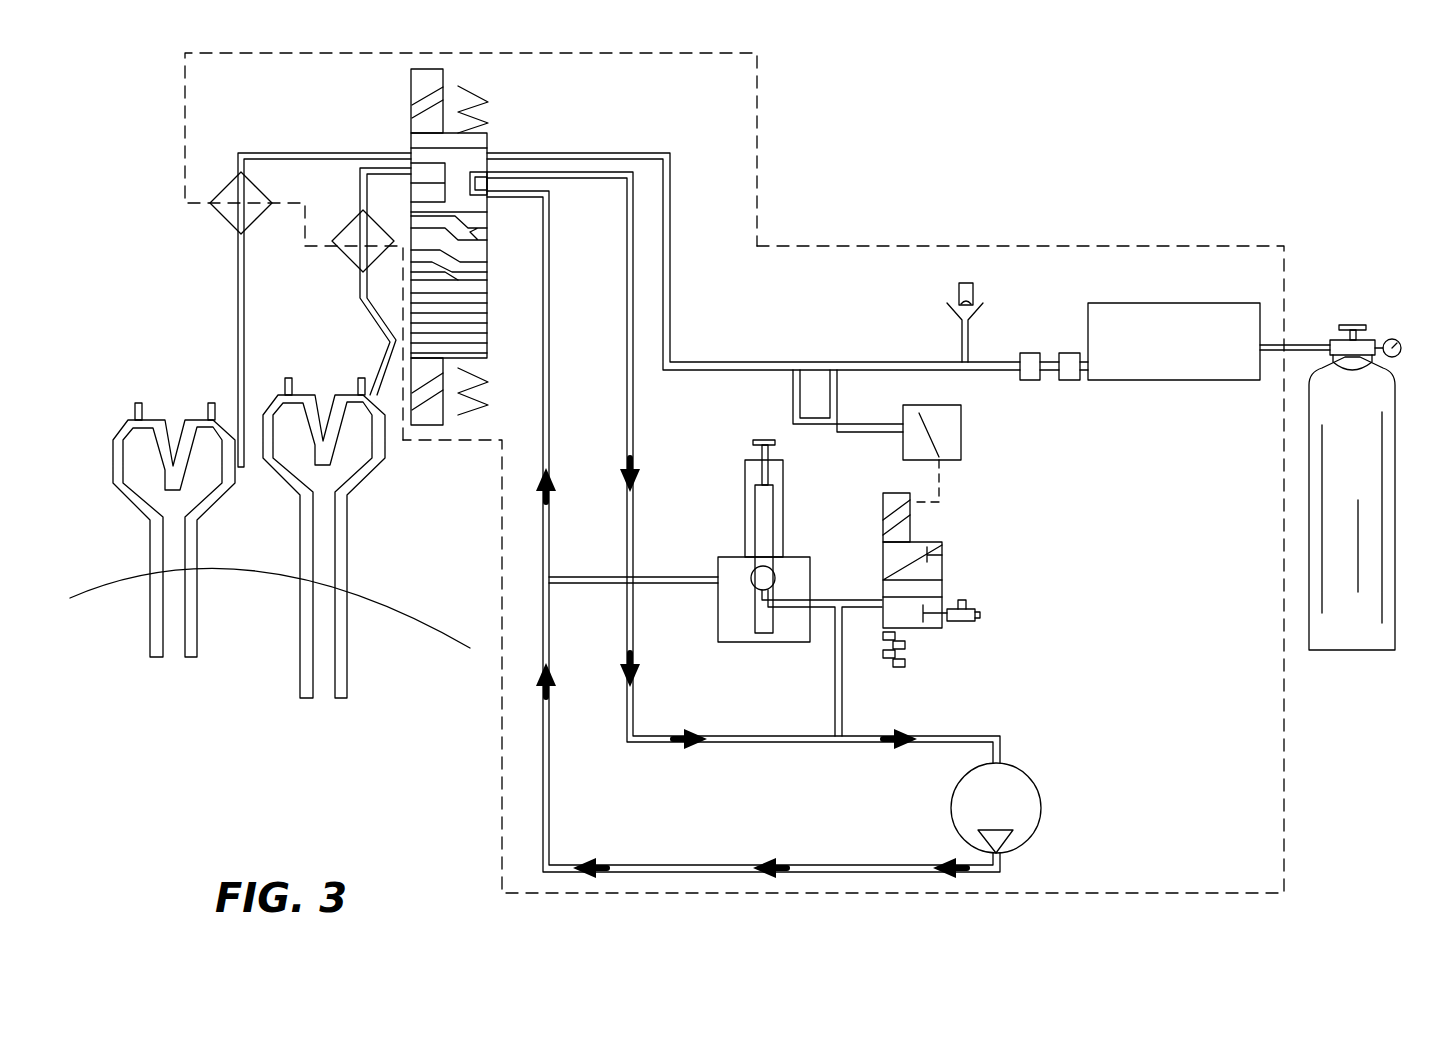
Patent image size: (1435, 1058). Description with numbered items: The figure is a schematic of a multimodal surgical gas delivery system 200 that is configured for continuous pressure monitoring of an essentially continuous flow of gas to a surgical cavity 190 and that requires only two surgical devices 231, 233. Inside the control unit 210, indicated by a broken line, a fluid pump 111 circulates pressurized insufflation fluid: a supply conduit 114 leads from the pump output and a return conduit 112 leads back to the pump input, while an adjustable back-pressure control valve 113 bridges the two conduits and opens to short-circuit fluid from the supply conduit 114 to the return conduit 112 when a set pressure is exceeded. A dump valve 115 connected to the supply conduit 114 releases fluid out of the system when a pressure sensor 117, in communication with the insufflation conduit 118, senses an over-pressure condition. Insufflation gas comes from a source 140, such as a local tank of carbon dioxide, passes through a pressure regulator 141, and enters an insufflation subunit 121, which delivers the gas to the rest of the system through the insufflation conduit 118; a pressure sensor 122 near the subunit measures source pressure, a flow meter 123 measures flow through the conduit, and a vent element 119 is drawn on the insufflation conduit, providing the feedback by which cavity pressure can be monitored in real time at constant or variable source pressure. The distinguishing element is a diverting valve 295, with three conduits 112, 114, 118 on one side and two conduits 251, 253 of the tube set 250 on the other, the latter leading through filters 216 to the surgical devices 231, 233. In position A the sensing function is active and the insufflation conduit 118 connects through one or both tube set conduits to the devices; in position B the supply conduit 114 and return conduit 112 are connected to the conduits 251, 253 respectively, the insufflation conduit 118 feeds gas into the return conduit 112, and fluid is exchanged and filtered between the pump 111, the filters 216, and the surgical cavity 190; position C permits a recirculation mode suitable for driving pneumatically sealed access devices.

The surgical gas delivery system 200 is at (1212, 115).
The tube set 250 is at (229, 143).
The control unit 210 is at (1138, 895).
The diverting valve 295 is at (490, 133).
The filters 216 is at (213, 210).
The conduit 251 is at (238, 340).
The conduit 253 is at (377, 368).
The surgical cavity 190 is at (112, 598).
The surgical device 231 is at (150, 652).
The surgical device 233 is at (302, 680).
The insufflation conduit 118 is at (1045, 352).
The vent 119 is at (975, 307).
The flow meter 123 is at (1033, 380).
The pressure sensor 122 is at (1068, 382).
The insufflation subunit 121 is at (1197, 354).
The pressure regulator 141 is at (1370, 337).
The source 140 is at (1375, 485).
The pressure sensor 117 is at (961, 452).
The supply conduit 114 is at (743, 743).
The return conduit 112 is at (550, 760).
The fluid pump 111 is at (1040, 812).
The back-pressure control valve 113 is at (800, 557).
The dump valve 115 is at (930, 630).